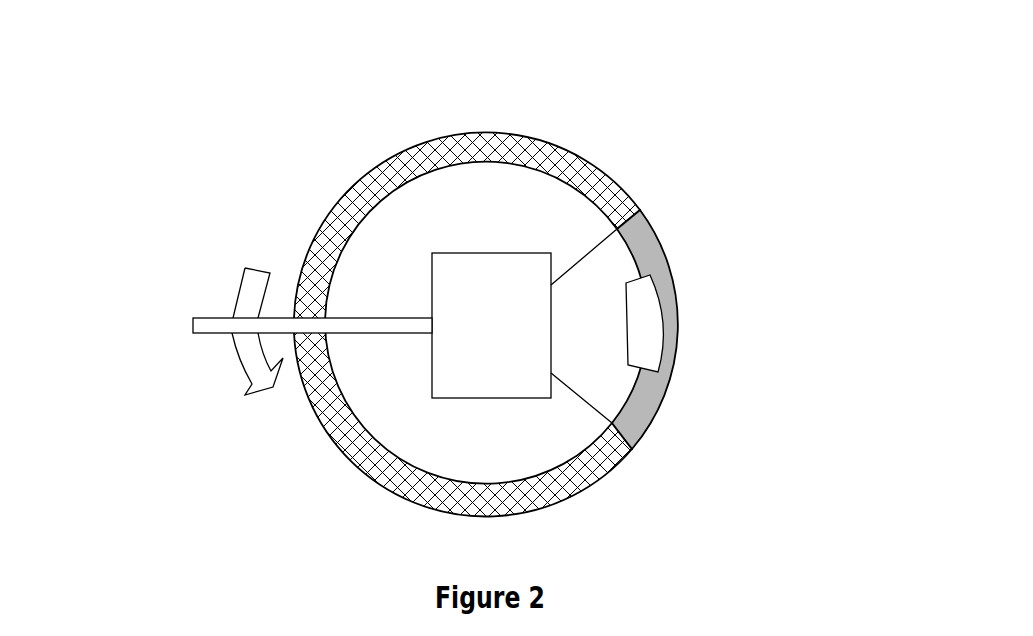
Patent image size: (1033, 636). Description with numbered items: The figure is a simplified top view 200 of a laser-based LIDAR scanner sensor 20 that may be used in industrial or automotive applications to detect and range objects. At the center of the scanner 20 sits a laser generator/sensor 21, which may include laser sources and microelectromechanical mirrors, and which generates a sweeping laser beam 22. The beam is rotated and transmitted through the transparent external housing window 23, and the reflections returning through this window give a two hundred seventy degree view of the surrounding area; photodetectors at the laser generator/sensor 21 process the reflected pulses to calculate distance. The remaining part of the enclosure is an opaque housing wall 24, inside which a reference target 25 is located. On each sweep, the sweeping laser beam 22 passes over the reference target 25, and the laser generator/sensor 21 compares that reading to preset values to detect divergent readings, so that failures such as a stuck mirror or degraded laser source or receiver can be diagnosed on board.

The simplified top view 200 is at (81, 40).
The LIDAR scanner sensor 20 is at (413, 148).
The laser generator/sensor 21 is at (538, 358).
The sweeping laser beam 22 is at (193, 333).
The housing window 23 is at (485, 130).
The housing wall 24 is at (833, 208).
The reference target 25 is at (647, 323).